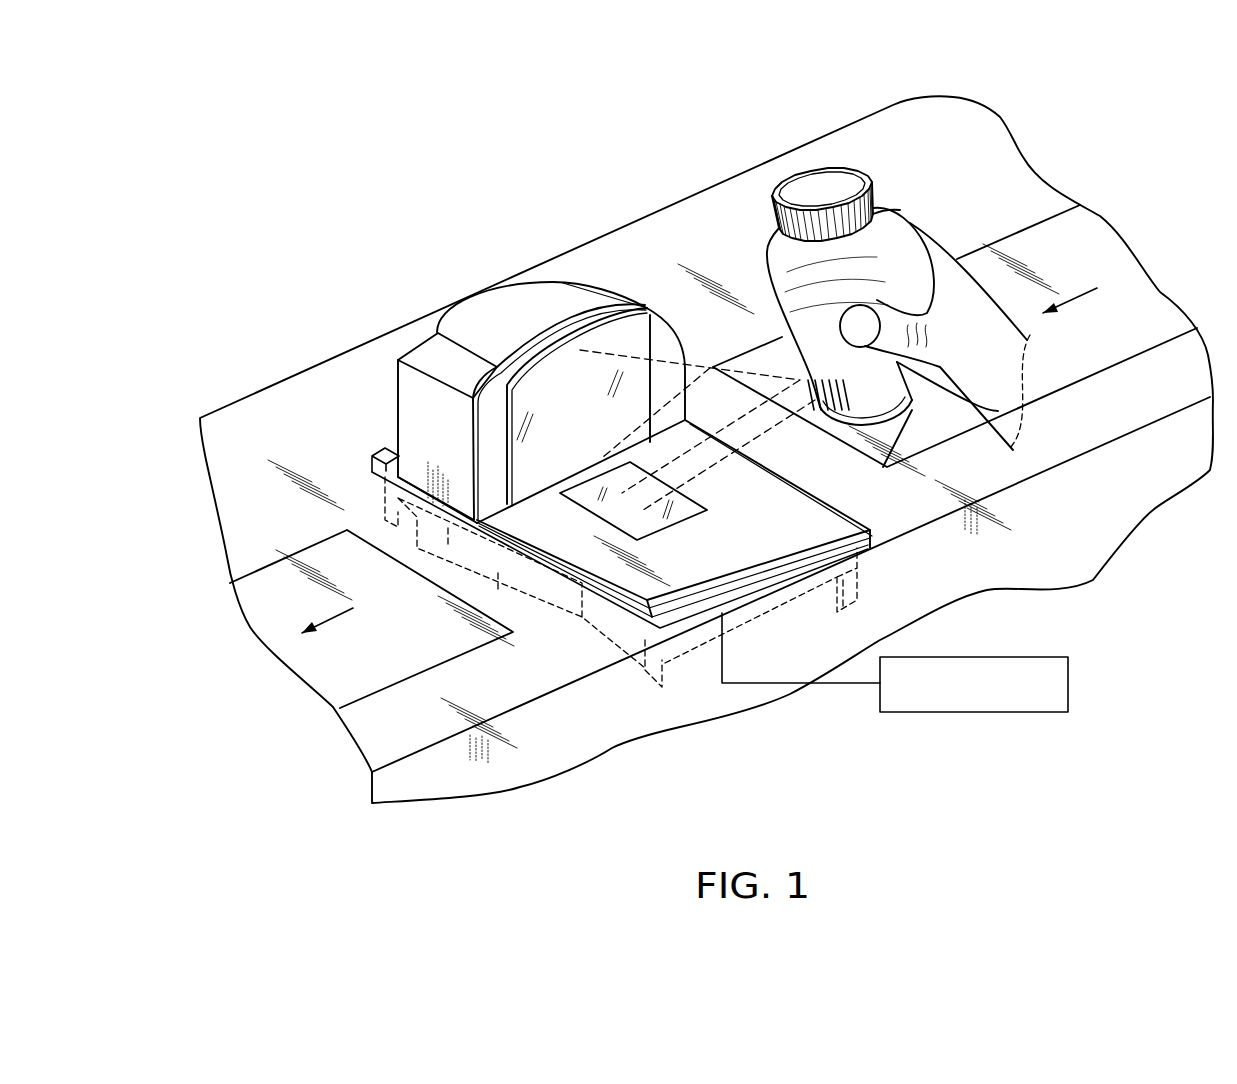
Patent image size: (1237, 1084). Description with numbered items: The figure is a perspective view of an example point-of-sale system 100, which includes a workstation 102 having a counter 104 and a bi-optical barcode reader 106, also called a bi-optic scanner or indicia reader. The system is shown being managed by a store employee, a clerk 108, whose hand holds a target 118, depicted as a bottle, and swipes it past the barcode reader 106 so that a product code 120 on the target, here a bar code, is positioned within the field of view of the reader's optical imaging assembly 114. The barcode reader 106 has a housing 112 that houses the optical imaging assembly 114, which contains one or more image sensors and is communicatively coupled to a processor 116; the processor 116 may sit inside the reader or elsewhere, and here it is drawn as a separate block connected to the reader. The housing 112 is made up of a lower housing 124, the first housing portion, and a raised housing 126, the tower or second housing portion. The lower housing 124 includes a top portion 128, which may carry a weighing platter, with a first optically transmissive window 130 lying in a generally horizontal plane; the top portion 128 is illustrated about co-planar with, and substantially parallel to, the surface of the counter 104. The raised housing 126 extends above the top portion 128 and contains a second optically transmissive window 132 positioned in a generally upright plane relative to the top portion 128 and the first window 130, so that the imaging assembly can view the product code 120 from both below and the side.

The point-of-sale system 100 is at (268, 216).
The workstation 102 is at (656, 180).
The counter 104 is at (1003, 138).
The bi-optical barcode reader 106 is at (412, 428).
The clerk 108 is at (1012, 347).
The housing 112 is at (438, 391).
The optical imaging assembly 114 is at (520, 455).
The processor 116 is at (1068, 685).
The target 118 is at (897, 245).
The product code 120 is at (847, 395).
The lower housing 124 is at (612, 685).
The raised housing 126 is at (468, 304).
The top portion 128 is at (628, 592).
The first optically transmissive window 130 is at (680, 517).
The second optically transmissive window 132 is at (533, 383).